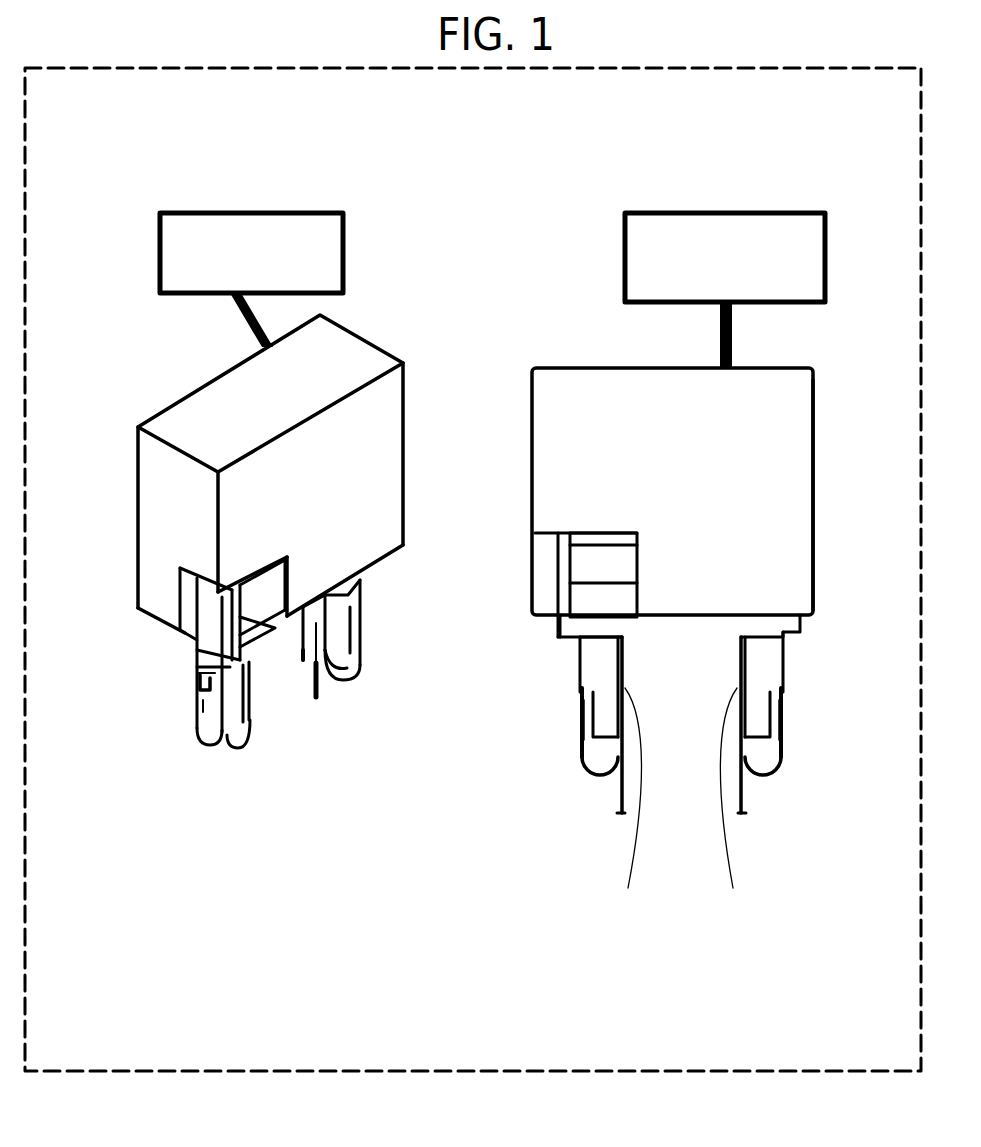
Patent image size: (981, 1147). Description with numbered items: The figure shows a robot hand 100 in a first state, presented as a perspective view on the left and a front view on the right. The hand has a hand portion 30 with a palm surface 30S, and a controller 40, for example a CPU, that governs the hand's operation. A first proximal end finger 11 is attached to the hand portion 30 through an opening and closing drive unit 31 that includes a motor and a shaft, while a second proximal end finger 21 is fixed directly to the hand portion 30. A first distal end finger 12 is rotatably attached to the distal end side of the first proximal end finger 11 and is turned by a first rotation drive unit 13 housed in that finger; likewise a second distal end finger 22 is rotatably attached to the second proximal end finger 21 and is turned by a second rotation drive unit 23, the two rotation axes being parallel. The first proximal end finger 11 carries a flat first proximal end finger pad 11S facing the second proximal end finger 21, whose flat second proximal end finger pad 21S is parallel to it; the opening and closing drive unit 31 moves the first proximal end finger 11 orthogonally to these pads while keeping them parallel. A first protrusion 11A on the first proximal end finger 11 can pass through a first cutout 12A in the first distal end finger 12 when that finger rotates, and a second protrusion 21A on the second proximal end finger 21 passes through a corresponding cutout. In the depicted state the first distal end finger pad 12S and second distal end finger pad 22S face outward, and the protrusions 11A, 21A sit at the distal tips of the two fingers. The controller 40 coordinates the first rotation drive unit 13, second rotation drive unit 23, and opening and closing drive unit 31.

The robot hand 100 is at (150, 228).
The controller 40 is at (340, 213).
The hand portion 30 is at (200, 382).
The palm surface 30S is at (708, 612).
The opening and closing drive unit 31 is at (255, 583).
The first proximal end finger 11 is at (225, 670).
The first protrusion 11A is at (622, 812).
The first proximal end finger pad 11S is at (632, 807).
The first distal end finger 12 is at (198, 685).
The first distal end finger pad 12S is at (192, 680).
The first cutout 12A is at (200, 702).
The first rotation drive unit 13 is at (207, 732).
The second proximal end finger 21 is at (352, 586).
The second protrusion 21A is at (317, 698).
The second proximal end finger pad 21S is at (277, 710).
The second distal end finger 22 is at (350, 617).
The second distal end finger pad 22S is at (785, 743).
The second rotation drive unit 23 is at (342, 668).